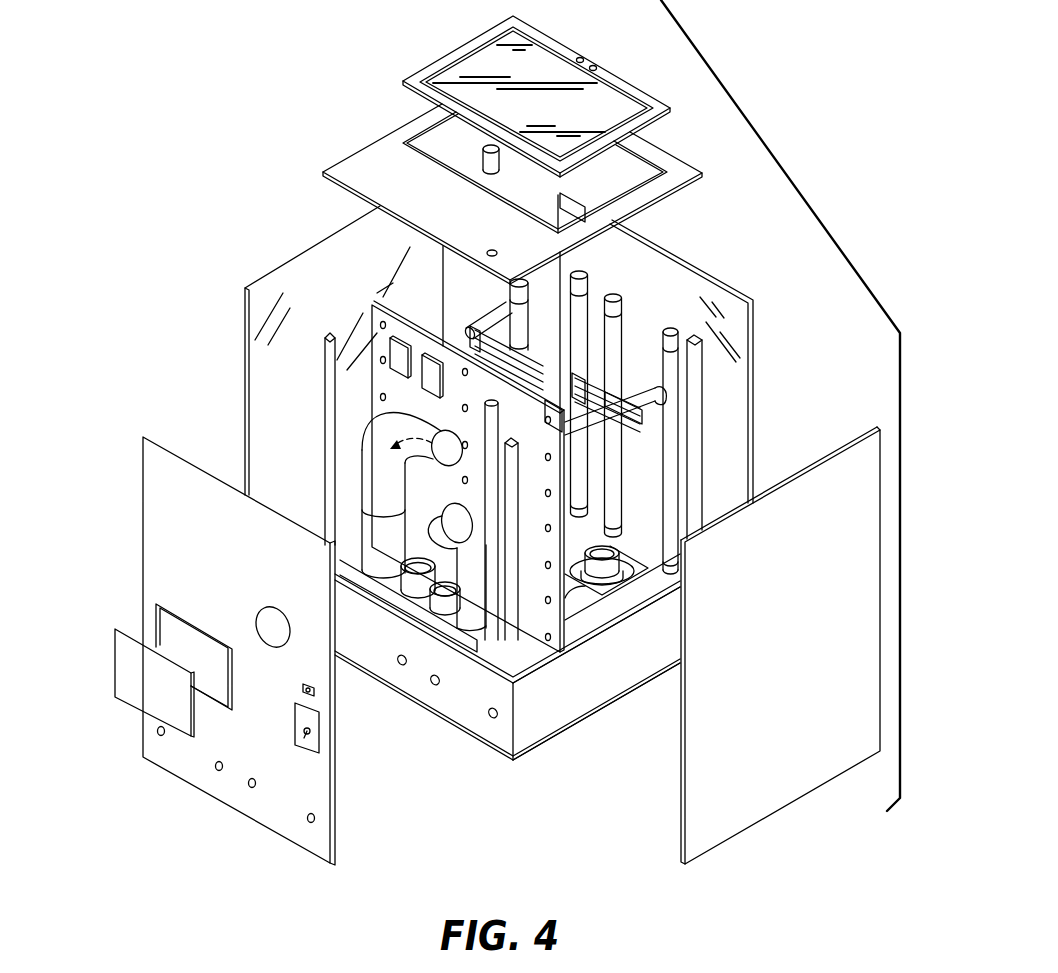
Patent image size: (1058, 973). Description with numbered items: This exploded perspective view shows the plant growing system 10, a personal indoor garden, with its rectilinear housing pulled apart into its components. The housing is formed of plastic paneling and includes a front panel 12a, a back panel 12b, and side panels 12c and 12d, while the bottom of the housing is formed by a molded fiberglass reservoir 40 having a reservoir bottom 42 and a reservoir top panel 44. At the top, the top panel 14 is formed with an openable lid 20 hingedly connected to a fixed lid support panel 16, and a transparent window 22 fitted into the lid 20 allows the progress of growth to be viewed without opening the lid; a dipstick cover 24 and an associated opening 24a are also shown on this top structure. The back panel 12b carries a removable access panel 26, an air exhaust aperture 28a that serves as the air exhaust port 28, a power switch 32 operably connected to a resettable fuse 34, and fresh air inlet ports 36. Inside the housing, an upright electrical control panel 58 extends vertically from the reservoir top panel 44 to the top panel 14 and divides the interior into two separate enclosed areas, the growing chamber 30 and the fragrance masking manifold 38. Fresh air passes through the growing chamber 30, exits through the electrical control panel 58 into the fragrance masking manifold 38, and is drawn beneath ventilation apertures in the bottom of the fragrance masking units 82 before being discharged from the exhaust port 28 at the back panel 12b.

The plant growing system 10 is at (779, 148).
The front panel 12a is at (690, 270).
The back panel 12b is at (193, 464).
The side panel 12c is at (808, 470).
The side panel 12d is at (313, 250).
The top panel 14 is at (657, 143).
The lid support panel 16 is at (366, 170).
The lid 20 is at (684, 173).
The transparent window 22 is at (618, 106).
The dipstick cover 24 is at (483, 159).
The knob mounting hole 24a is at (491, 250).
The access panel 26 is at (194, 722).
The air exhaust port 28 is at (455, 525).
The air exhaust aperture 28a is at (273, 606).
The growing chamber 30 is at (596, 462).
The power switch 32 is at (321, 731).
The fuse 34 is at (316, 690).
The fresh air inlet port 36 is at (252, 789).
The fragrance masking manifold 38 is at (432, 498).
The reservoir 40 is at (546, 768).
The reservoir bottom 42 is at (592, 718).
The reservoir top panel 44 is at (612, 598).
The electrical control panel 58 is at (417, 328).
The fragrance masking unit 82 is at (409, 586).